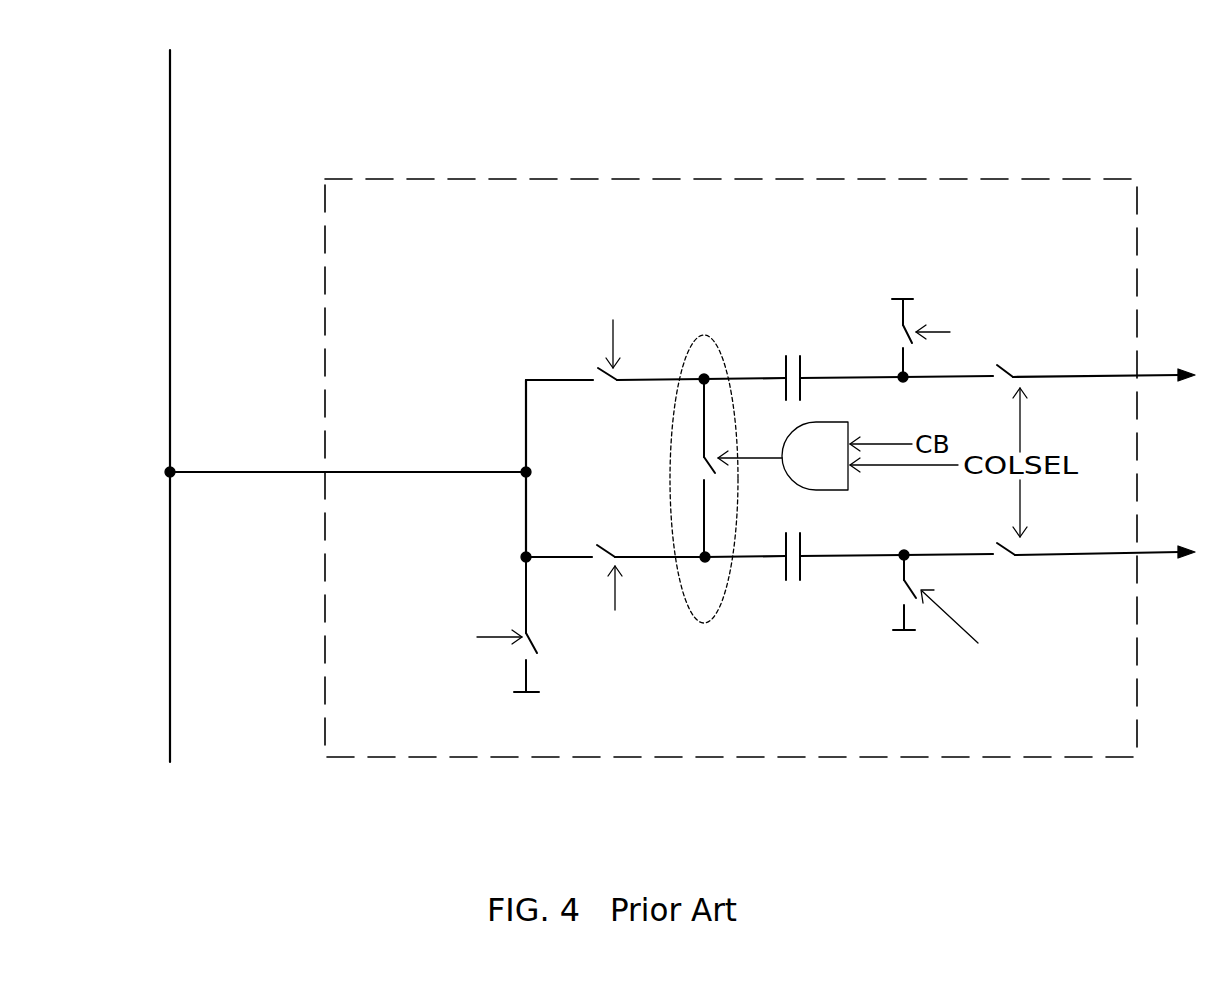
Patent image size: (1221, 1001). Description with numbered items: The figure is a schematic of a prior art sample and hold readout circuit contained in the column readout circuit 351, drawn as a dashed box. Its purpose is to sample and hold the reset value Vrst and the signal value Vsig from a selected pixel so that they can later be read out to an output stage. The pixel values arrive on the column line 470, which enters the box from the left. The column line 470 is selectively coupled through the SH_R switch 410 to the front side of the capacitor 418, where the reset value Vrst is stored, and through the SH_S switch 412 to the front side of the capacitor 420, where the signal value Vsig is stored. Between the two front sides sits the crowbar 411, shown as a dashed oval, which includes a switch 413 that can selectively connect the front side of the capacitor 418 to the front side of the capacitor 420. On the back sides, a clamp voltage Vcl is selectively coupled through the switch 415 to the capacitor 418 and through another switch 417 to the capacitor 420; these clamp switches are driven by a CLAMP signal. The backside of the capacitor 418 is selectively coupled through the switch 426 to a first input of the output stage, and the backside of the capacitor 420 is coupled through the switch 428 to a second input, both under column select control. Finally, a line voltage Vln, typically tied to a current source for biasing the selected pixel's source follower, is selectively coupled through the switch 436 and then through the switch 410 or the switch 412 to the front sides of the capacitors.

The column readout circuit 351 is at (462, 216).
The column line 470 is at (175, 398).
The SH_R switch 410 is at (600, 385).
The crowbar 411 is at (701, 334).
The SH_S switch 412 is at (596, 546).
The switch 413 is at (700, 468).
The switch 415 is at (900, 338).
The switch 417 is at (900, 597).
The capacitor 418 is at (790, 353).
The capacitor 420 is at (793, 584).
The switch 426 is at (1000, 385).
The switch 428 is at (1003, 562).
The switch 436 is at (522, 652).